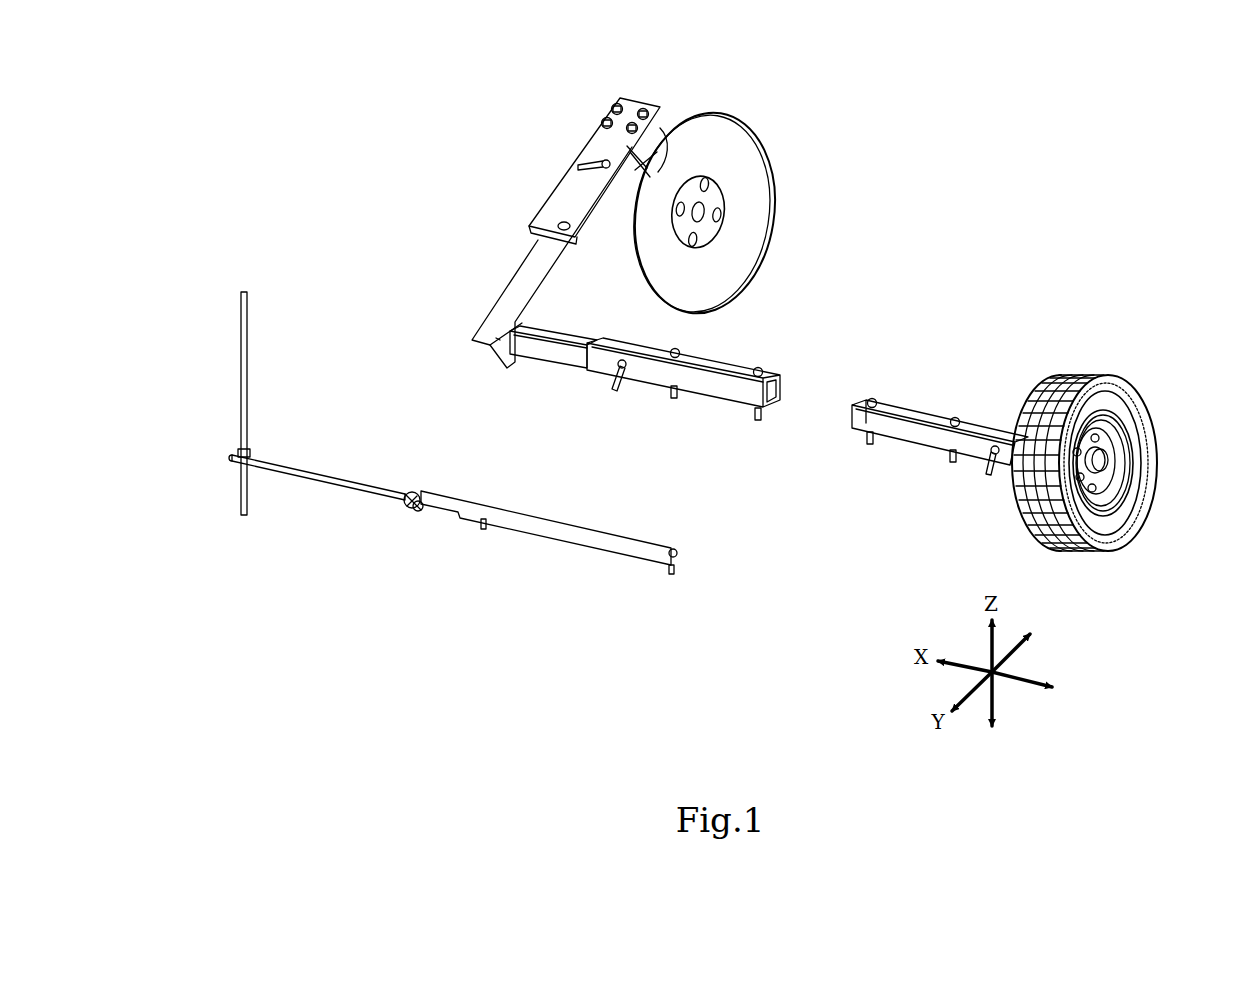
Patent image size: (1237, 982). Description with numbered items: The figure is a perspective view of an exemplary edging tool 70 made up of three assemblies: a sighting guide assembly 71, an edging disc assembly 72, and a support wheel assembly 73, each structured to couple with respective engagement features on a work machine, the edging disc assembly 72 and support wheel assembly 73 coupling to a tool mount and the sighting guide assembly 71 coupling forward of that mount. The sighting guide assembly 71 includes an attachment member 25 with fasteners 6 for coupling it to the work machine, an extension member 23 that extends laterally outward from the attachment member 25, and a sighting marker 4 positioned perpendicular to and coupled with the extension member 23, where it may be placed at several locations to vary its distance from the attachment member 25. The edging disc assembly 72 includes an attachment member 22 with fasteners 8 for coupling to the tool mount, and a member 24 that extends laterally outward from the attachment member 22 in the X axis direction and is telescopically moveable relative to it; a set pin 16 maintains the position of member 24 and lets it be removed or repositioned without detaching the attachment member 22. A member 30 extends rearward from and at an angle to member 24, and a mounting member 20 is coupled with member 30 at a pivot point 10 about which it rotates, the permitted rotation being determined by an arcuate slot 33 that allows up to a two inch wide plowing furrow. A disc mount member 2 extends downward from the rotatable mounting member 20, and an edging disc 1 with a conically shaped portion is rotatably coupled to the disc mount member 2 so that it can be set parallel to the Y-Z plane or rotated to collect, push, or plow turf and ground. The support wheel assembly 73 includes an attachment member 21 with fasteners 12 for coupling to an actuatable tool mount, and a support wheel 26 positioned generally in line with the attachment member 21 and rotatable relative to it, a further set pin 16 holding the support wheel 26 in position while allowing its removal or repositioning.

The edging disc 1 is at (773, 183).
The disc mount member 2 is at (645, 152).
The sighting marker 4 is at (242, 497).
The fasteners 6 is at (483, 531).
The fasteners 8 is at (675, 400).
The pivot point 10 is at (578, 230).
The fasteners 12 is at (872, 446).
The set pin 16 is at (617, 392).
The mounting member 20 is at (603, 108).
The attachment member 21 is at (893, 402).
The attachment member 22 is at (743, 364).
The extension member 23 is at (355, 480).
The member 24 is at (540, 360).
The attachment member 25 is at (557, 540).
The support wheel 26 is at (1150, 490).
The member 30 is at (497, 298).
The arcuate slot 33 is at (582, 152).
The edging tool 70 is at (920, 167).
The sighting guide assembly 71 is at (362, 498).
The edging disc assembly 72 is at (518, 218).
The support wheel assembly 73 is at (936, 400).